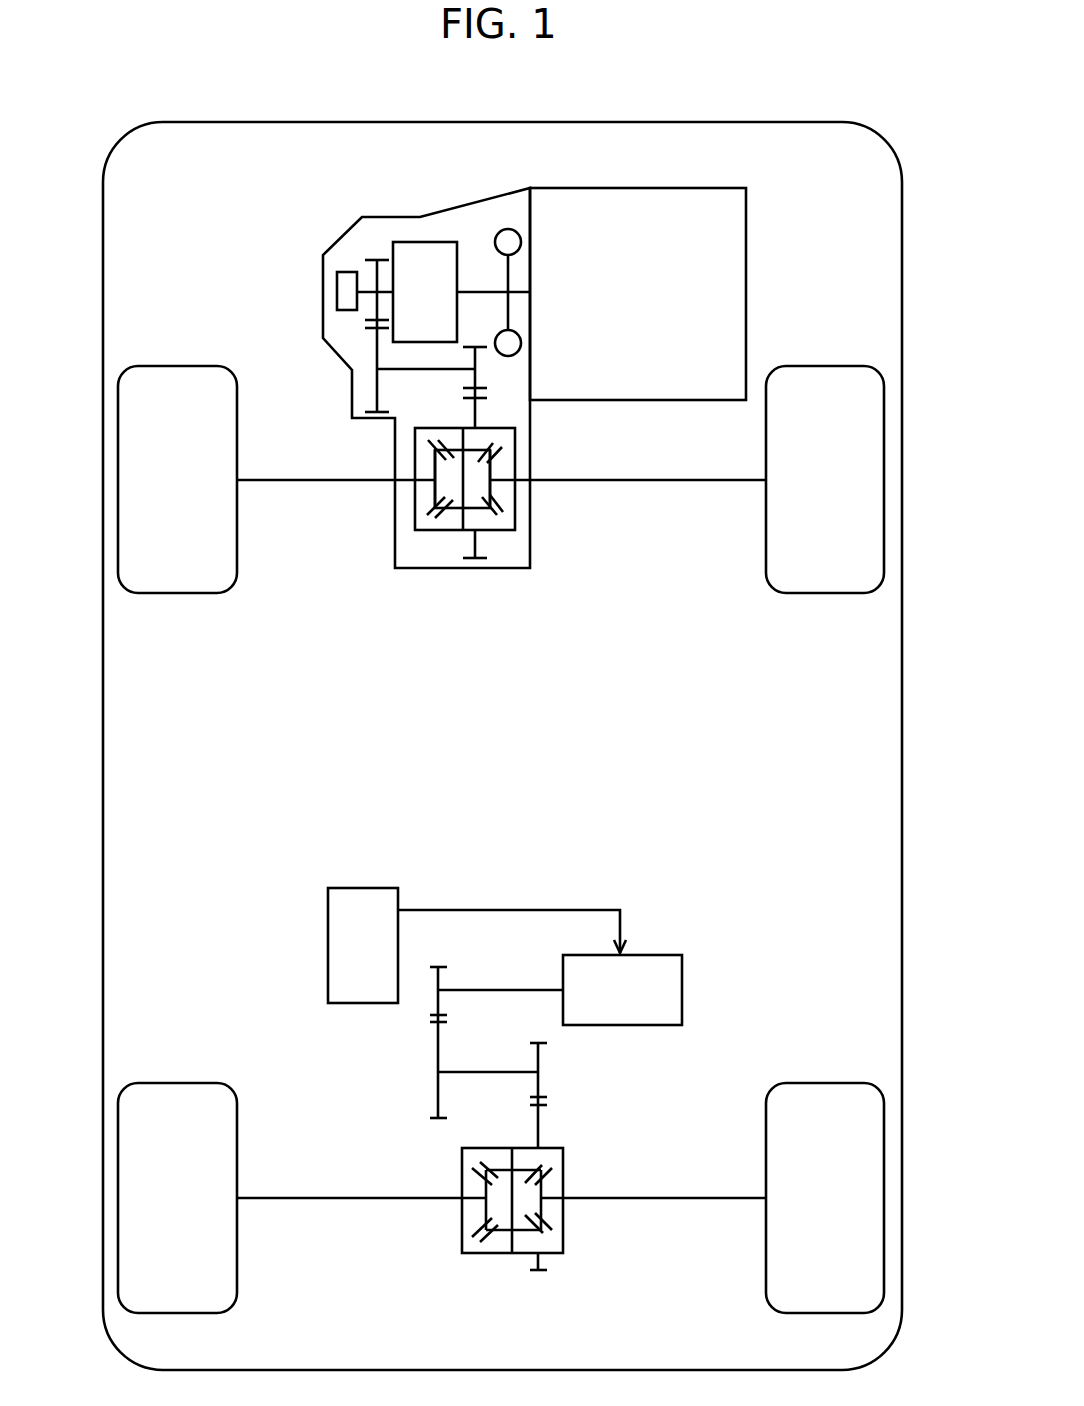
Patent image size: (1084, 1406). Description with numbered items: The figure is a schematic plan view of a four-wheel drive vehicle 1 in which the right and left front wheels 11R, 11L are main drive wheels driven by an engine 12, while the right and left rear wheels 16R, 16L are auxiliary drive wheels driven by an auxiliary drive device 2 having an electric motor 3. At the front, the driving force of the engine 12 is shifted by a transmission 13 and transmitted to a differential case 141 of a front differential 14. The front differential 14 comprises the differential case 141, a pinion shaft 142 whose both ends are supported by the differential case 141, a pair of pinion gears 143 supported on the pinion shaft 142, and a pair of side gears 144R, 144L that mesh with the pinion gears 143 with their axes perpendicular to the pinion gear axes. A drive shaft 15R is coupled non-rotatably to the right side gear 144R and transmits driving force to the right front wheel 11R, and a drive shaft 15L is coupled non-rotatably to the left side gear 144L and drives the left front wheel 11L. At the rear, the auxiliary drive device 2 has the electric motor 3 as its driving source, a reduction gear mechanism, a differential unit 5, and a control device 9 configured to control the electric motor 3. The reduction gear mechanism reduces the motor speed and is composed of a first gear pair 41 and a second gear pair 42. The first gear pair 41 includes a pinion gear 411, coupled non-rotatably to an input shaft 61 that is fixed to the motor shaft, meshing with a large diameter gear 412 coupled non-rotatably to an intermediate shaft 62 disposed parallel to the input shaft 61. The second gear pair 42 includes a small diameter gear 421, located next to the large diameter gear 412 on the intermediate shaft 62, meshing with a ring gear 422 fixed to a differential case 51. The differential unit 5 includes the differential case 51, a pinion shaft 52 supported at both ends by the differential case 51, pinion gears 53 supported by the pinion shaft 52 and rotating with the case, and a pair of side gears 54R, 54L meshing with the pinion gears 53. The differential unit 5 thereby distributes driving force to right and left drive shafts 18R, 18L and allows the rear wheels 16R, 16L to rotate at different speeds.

The four-wheel drive vehicle 1 is at (748, 122).
The auxiliary drive device 2 is at (300, 865).
The electric motor 3 is at (663, 955).
The differential unit 5 is at (567, 1168).
The control device 9 is at (352, 888).
The left front wheel 11L is at (120, 477).
The right front wheel 11R is at (883, 473).
The engine 12 is at (670, 188).
The transmission 13 is at (398, 237).
The front differential 14 is at (398, 538).
The drive shaft 15L is at (298, 475).
The drive shaft 15R is at (682, 477).
The left rear wheel 16L is at (117, 1195).
The right rear wheel 16R is at (885, 1200).
The drive shaft 18L is at (298, 1200).
The drive shaft 18R is at (687, 1202).
The first gear pair 41 is at (333, 1023).
The second gear pair 42 is at (634, 1060).
The differential case 51 is at (472, 1253).
The pinion shaft 52 is at (512, 1200).
The pinion gears 53 is at (503, 1170).
The left side gear 54L is at (487, 1203).
The right side gear 54R is at (540, 1210).
The input shaft 61 is at (503, 990).
The intermediate shaft 62 is at (502, 1072).
The differential case 141 is at (425, 533).
The pinion shaft 142 is at (435, 485).
The pinion gears 143 is at (478, 450).
The left side gear 144L is at (463, 480).
The right side gear 144R is at (490, 468).
The pinion gear 411 is at (433, 1008).
The large diameter gear 412 is at (428, 1080).
The small diameter gear 421 is at (543, 1060).
The ring gear 422 is at (540, 1132).